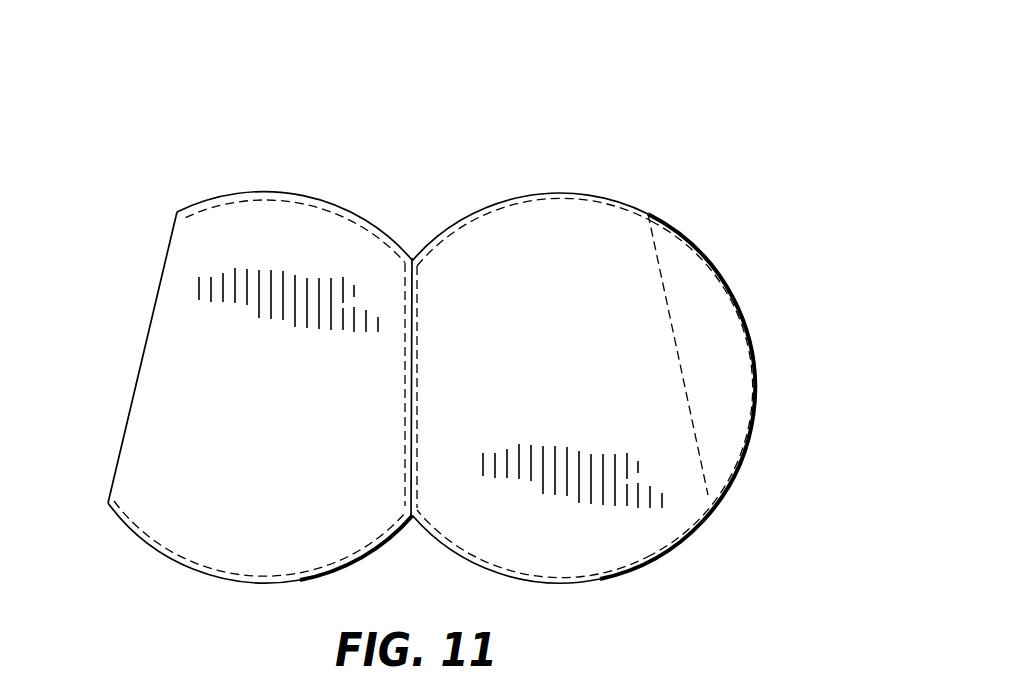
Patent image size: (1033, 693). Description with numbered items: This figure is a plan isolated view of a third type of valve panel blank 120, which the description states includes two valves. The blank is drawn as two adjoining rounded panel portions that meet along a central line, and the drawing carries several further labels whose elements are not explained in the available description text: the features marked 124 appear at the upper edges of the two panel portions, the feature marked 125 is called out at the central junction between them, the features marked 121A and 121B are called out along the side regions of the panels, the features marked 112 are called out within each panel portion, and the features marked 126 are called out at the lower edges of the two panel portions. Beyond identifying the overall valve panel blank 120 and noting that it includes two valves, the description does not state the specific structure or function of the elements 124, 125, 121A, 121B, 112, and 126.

The valve panel blank 120 is at (580, 85).
The top edge of panel 124 is at (270, 192).
The center fold line 125 is at (413, 313).
The panel side edge / fold line 121A is at (140, 360).
The curved outer edge 121B is at (755, 378).
The perforations 112 is at (283, 396).
The bottom edge of panel 126 is at (263, 583).